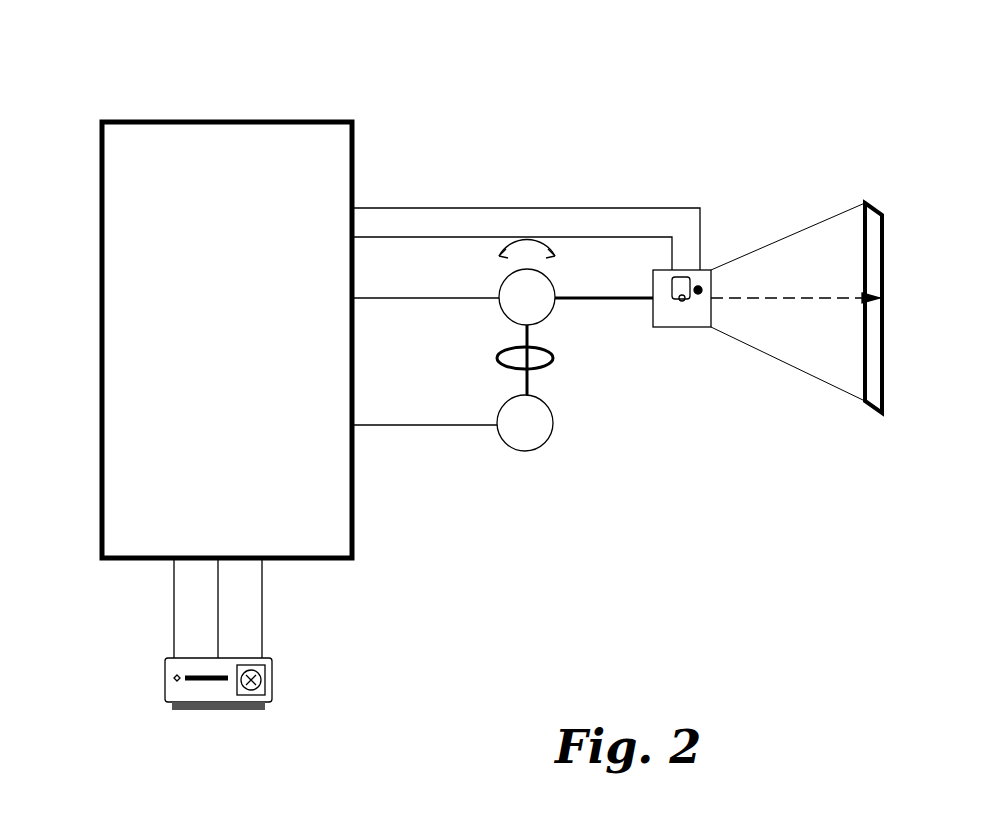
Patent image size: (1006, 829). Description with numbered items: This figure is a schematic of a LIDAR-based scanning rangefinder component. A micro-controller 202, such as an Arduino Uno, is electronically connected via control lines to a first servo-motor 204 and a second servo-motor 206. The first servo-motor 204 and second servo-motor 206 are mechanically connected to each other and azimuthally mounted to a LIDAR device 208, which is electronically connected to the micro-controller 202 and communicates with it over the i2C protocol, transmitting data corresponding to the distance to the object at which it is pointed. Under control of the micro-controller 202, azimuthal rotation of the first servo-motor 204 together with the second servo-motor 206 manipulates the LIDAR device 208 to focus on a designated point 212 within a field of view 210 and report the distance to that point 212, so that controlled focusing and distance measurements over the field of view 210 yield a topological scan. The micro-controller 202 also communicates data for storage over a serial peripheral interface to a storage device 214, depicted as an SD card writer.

The micro-controller 202 is at (112, 122).
The first servo-motor 204 is at (513, 449).
The second servo-motor 206 is at (507, 321).
The LIDAR device 208 is at (683, 327).
The field of view 210 is at (872, 236).
The designated point 212 is at (882, 310).
The storage device 214 is at (270, 700).